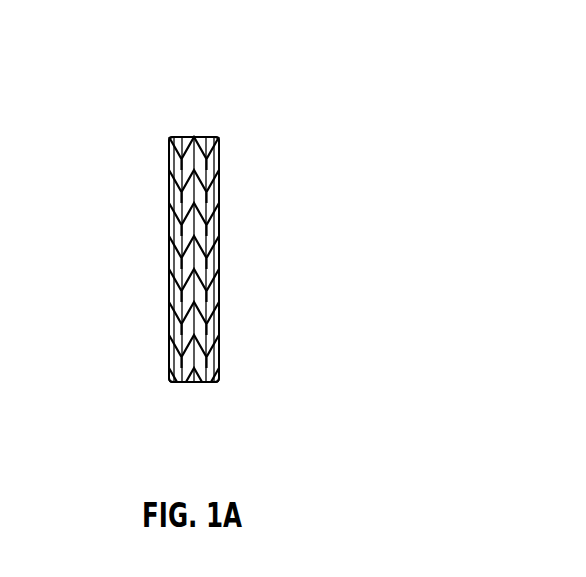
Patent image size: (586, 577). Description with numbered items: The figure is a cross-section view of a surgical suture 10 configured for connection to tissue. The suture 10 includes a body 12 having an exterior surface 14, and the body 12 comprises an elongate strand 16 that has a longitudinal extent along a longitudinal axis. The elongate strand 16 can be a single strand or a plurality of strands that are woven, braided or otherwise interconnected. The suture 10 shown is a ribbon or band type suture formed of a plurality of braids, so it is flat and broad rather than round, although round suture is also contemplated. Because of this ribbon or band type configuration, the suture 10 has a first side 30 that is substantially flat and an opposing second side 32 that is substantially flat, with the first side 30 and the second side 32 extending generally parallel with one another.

The surgical suture 10 is at (206, 262).
The body 12 is at (208, 415).
The exterior surface 14 is at (193, 137).
The elongate strand 16 is at (194, 383).
The first side 30 is at (219, 257).
The second side 32 is at (169, 238).